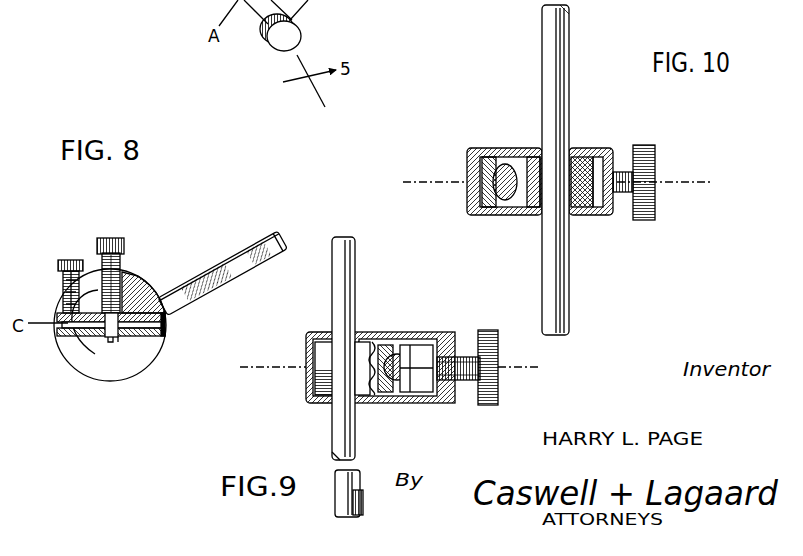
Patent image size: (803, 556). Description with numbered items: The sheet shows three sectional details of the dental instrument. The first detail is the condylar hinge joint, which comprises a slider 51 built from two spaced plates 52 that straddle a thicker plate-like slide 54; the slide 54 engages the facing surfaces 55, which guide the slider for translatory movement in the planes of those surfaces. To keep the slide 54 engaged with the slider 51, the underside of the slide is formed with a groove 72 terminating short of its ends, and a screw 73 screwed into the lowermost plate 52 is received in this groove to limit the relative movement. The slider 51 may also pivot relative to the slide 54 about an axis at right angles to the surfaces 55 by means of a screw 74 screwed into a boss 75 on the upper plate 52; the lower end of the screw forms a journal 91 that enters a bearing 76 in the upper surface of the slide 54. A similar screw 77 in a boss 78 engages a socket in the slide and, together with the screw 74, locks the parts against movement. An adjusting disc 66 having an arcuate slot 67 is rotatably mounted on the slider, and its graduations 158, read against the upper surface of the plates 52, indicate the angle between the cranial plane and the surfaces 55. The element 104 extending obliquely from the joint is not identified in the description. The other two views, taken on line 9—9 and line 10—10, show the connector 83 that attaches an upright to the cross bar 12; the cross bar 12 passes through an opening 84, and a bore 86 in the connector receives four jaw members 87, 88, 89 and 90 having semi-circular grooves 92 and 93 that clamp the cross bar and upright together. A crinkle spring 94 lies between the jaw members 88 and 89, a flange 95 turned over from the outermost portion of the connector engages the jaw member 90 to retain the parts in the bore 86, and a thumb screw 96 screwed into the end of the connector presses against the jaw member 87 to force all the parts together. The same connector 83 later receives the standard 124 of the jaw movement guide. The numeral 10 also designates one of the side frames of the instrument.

In FIG. 8, the section line 9— 9 is at (57, 330).
In FIG. 10, the section line 9— 9 is at (423, 160).
In FIG. 9, the section line 10— 10 is at (269, 373).
In FIG. 9, the cross bar 12 is at (345, 417).
In FIG. 10, the cross bar 12 is at (498, 203).
In FIG. 8, the slider 51 is at (147, 320).
In FIG. 8, the spaced plates 52 is at (132, 305).
In FIG. 8, the slide 54 is at (165, 322).
In FIG. 8, the facing surfaces 55 is at (137, 312).
In FIG. 8, the adjusting disc 66 is at (105, 370).
In FIG. 8, the arcuate slot 67 is at (80, 348).
In FIG. 8, the groove 72 is at (100, 337).
In FIG. 8, the screw 73 is at (115, 337).
In FIG. 8, the screw 74 is at (103, 240).
In FIG. 8, the boss 75 is at (118, 262).
In FIG. 8, the bearing 76 is at (103, 337).
In FIG. 8, the screw 77 is at (58, 260).
In FIG. 8, the boss 78 is at (63, 295).
In FIG. 9, the connector 83 is at (450, 337).
In FIG. 10, the connector 83 is at (610, 150).
In FIG. 9, the opening 84 is at (332, 333).
In FIG. 10, the opening 84 is at (545, 210).
In FIG. 9, the bore 86 is at (423, 387).
In FIG. 9, the jaw member 87 is at (427, 355).
In FIG. 10, the jaw member 87 is at (590, 150).
In FIG. 9, the jaw member 88 is at (387, 345).
In FIG. 10, the jaw member 88 is at (533, 160).
In FIG. 9, the jaw member 89 is at (365, 348).
In FIG. 10, the jaw member 89 is at (503, 160).
In FIG. 9, the jaw member 90 is at (323, 353).
In FIG. 10, the jaw member 90 is at (480, 207).
In FIG. 8, the journal 91 is at (70, 340).
In FIG. 9, the semi-circular groove 92 is at (405, 390).
In FIG. 10, the semi-circular groove 92 is at (475, 150).
In FIG. 9, the semi-circular groove 93 is at (393, 357).
In FIG. 10, the semi-circular groove 93 is at (520, 150).
In FIG. 9, the crinkle spring 94 is at (387, 383).
In FIG. 9, the flange 95 is at (310, 393).
In FIG. 10, the flange 95 is at (468, 153).
In FIG. 9, the thumb screw 96 is at (487, 338).
In FIG. 10, the thumb screw 96 is at (650, 148).
In FIG. 8, the arm 104 is at (230, 257).
In FIG. 9, the standard 124 is at (405, 363).
In FIG. 10, the standard 124 is at (558, 37).
In FIG. 8, the graduations 158 is at (133, 298).